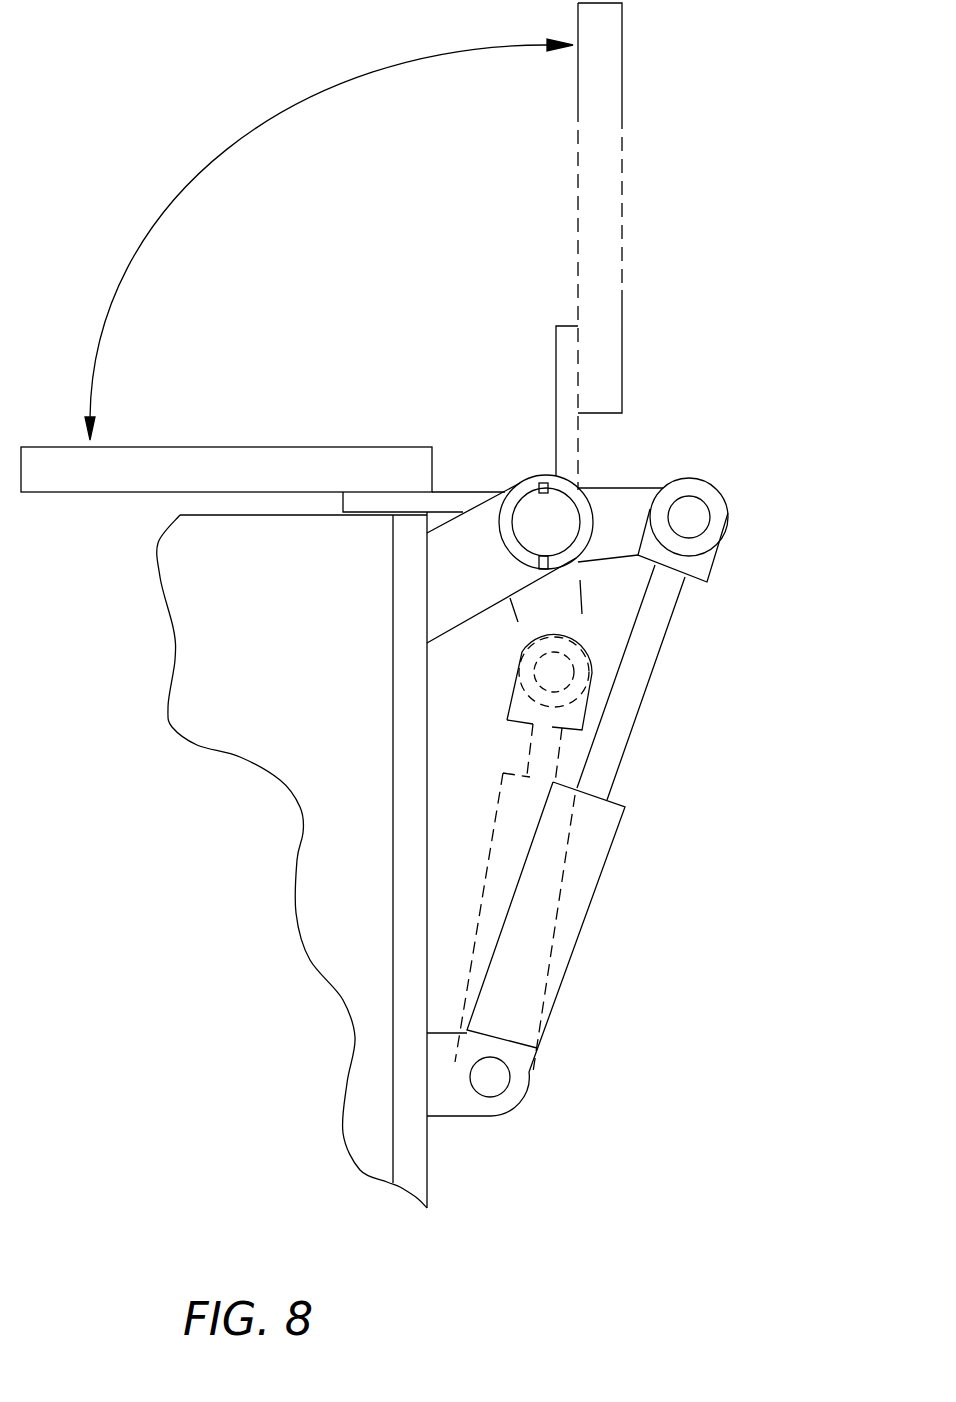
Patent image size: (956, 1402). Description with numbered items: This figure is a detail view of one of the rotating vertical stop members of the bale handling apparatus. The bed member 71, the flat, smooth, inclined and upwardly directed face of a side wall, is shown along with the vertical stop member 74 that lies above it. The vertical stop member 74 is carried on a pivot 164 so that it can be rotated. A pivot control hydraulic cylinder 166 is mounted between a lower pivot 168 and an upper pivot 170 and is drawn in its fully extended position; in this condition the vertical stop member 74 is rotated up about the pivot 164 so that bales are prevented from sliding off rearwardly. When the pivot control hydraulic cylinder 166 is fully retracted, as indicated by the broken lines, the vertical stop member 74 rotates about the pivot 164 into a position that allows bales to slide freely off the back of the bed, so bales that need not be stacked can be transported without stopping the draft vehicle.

The bed member 71 is at (329, 692).
The vertical stop member 74 is at (152, 462).
The pivot 164 is at (553, 528).
The pivot control hydraulic cylinder 166 is at (597, 873).
The pivot 168 is at (493, 1083).
The pivot 170 is at (695, 519).